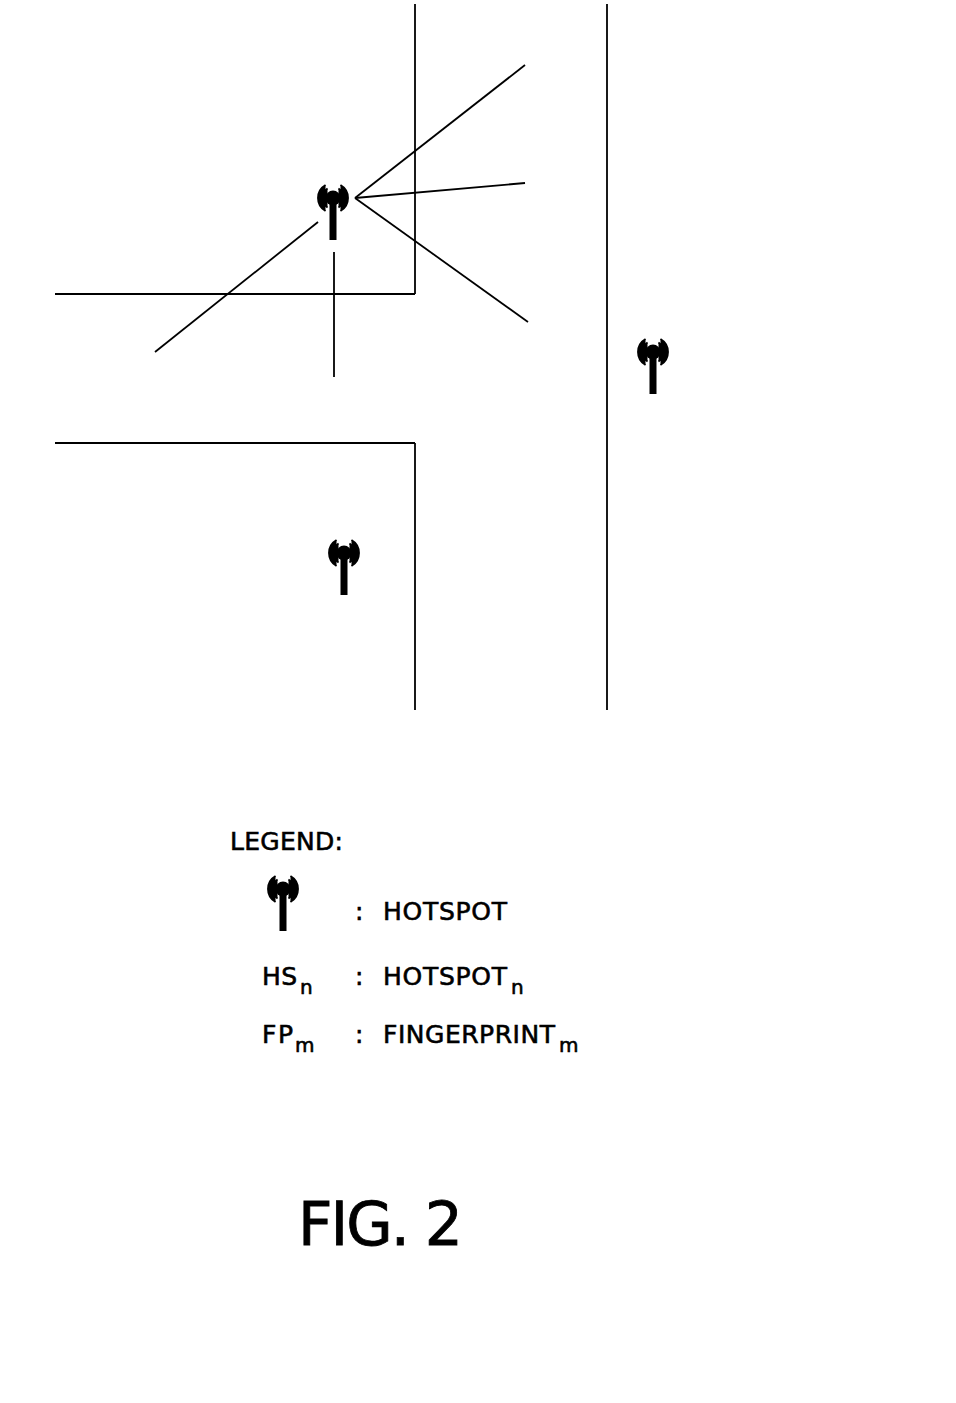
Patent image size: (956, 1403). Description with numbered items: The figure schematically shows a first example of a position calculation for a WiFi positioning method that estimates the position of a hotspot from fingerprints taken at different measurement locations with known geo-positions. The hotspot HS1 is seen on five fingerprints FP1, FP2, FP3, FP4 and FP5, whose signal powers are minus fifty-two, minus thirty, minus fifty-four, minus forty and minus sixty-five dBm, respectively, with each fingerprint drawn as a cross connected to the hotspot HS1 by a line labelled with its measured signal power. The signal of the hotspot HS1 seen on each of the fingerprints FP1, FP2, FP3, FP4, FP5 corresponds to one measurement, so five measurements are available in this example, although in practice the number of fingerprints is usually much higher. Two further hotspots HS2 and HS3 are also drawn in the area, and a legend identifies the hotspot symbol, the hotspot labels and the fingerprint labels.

The hotspot HS1 is at (316, 184).
The hotspot HS2 is at (685, 368).
The hotspot HS3 is at (328, 545).
The fingerprint FP1 is at (471, 111).
The fingerprint FP2 is at (471, 173).
The fingerprint FP3 is at (471, 270).
The fingerprint FP4 is at (381, 328).
The fingerprint FP5 is at (212, 318).